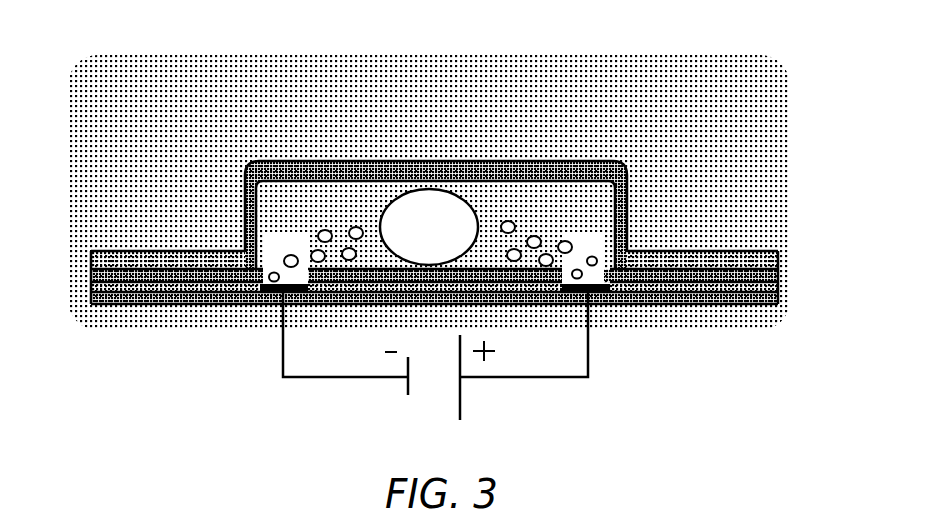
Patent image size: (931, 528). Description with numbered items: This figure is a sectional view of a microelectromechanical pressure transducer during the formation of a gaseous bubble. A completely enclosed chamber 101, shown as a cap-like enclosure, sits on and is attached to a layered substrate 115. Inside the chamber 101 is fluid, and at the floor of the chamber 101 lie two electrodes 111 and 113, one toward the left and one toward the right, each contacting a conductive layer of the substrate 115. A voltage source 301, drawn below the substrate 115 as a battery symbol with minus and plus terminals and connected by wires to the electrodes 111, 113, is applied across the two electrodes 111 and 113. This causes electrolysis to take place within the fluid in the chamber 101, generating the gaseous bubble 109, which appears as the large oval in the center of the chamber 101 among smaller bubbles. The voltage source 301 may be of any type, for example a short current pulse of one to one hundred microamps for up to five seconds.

The chamber 101 is at (313, 161).
The gaseous bubble 109 is at (429, 227).
The electrode 111 is at (265, 284).
The electrode 113 is at (603, 284).
The substrate 115 is at (721, 306).
The voltage source 301 is at (408, 393).